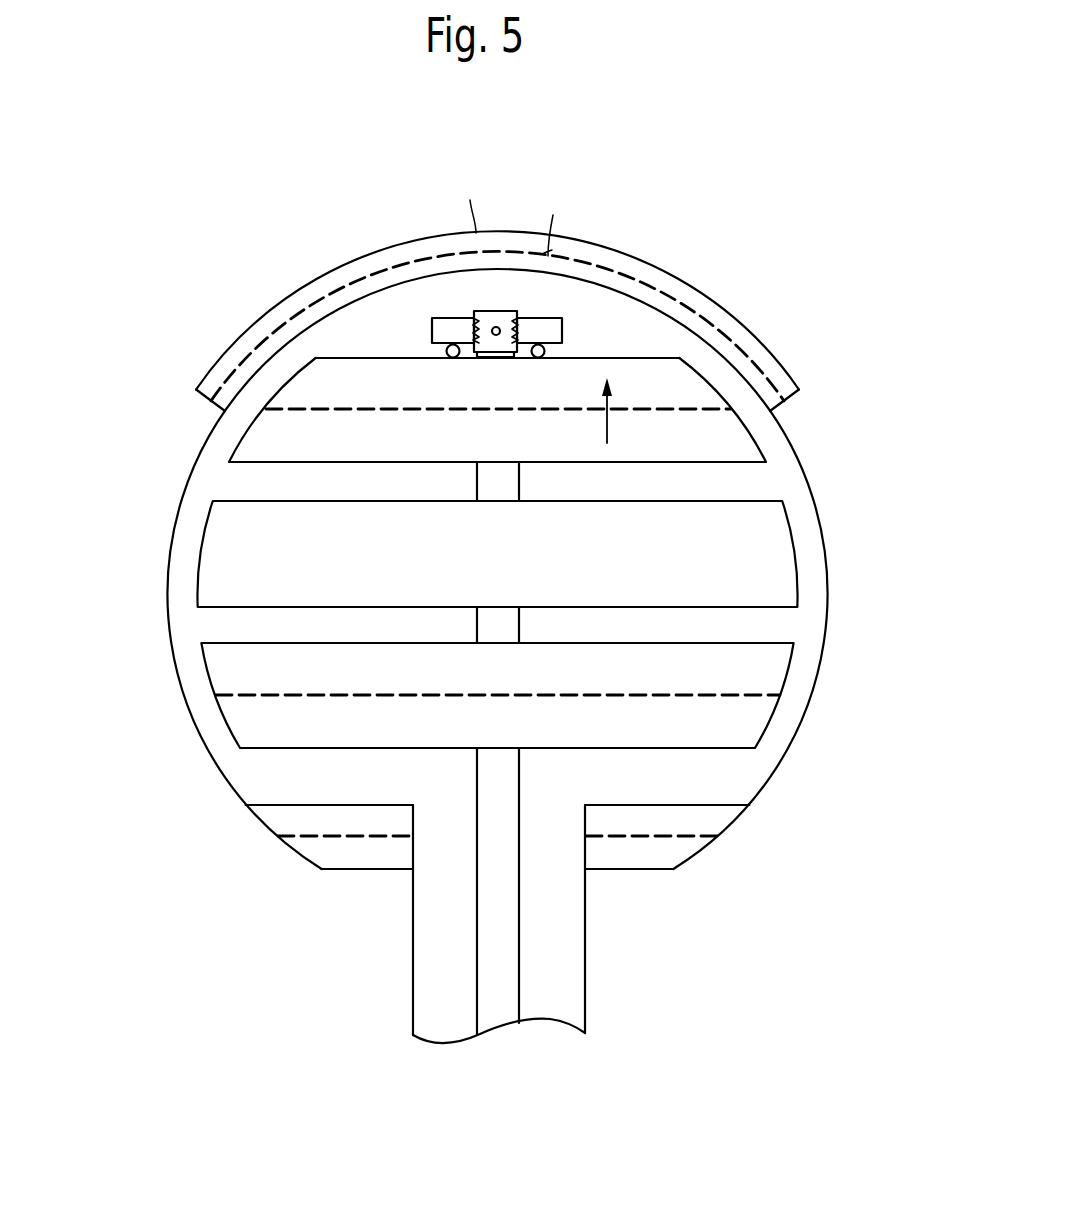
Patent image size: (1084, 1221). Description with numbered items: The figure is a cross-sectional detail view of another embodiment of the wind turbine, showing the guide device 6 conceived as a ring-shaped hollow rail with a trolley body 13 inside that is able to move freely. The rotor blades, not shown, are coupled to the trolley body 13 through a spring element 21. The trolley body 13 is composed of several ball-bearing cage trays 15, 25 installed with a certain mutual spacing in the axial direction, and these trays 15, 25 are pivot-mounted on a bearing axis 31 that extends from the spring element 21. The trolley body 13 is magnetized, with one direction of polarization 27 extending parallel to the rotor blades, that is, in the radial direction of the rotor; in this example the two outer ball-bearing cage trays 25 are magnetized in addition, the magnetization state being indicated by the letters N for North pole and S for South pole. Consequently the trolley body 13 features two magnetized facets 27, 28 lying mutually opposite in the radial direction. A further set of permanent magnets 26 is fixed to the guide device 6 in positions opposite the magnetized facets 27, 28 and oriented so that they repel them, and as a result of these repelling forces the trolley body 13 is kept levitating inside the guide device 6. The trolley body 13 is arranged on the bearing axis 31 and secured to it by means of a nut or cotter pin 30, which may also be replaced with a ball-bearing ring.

The guide device 6 is at (828, 607).
The trolley body 13 is at (132, 550).
The ball-bearing cage tray 15 is at (773, 528).
The spring element 21 is at (500, 1018).
The ball-bearing cage trays 25 is at (740, 444).
The permanent magnets 26 is at (763, 355).
The direction of polarization 27 is at (607, 425).
The magnetized facet 28 is at (401, 359).
The nut or cotter pin 30 is at (552, 333).
The bearing axis 31 is at (485, 484).